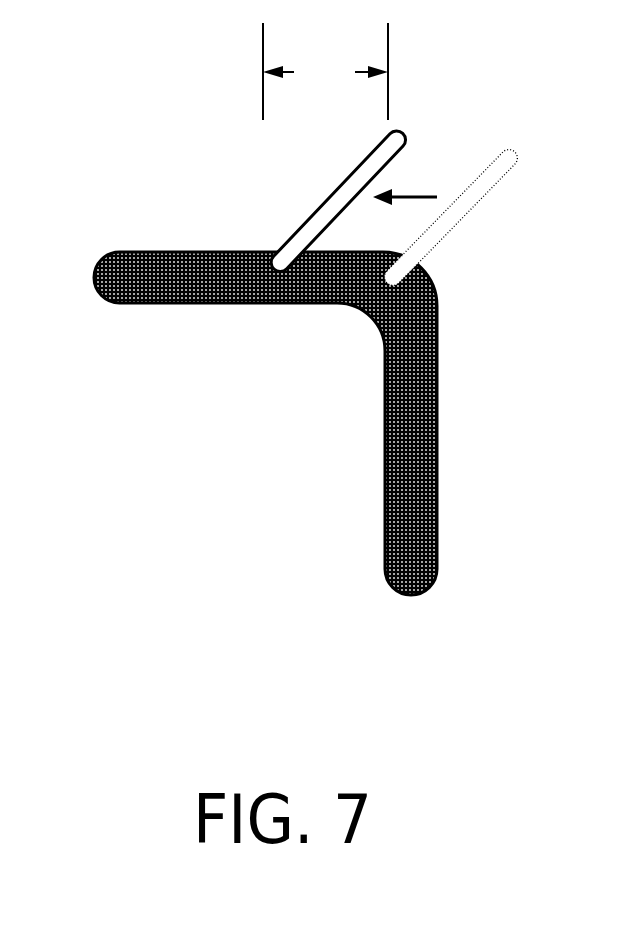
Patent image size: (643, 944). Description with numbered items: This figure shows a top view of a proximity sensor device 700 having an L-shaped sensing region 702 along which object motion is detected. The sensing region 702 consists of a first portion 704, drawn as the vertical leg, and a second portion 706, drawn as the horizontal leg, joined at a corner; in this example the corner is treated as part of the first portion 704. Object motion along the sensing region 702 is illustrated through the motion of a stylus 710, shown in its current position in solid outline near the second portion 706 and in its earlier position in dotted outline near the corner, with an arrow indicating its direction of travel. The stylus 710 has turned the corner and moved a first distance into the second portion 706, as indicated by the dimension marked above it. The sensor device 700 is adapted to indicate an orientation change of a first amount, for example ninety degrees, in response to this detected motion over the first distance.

The proximity sensor device 700 is at (307, 362).
The sensing region 702 is at (371, 327).
The first portion 704 is at (385, 442).
The second portion 706 is at (172, 305).
The stylus 710 is at (337, 187).